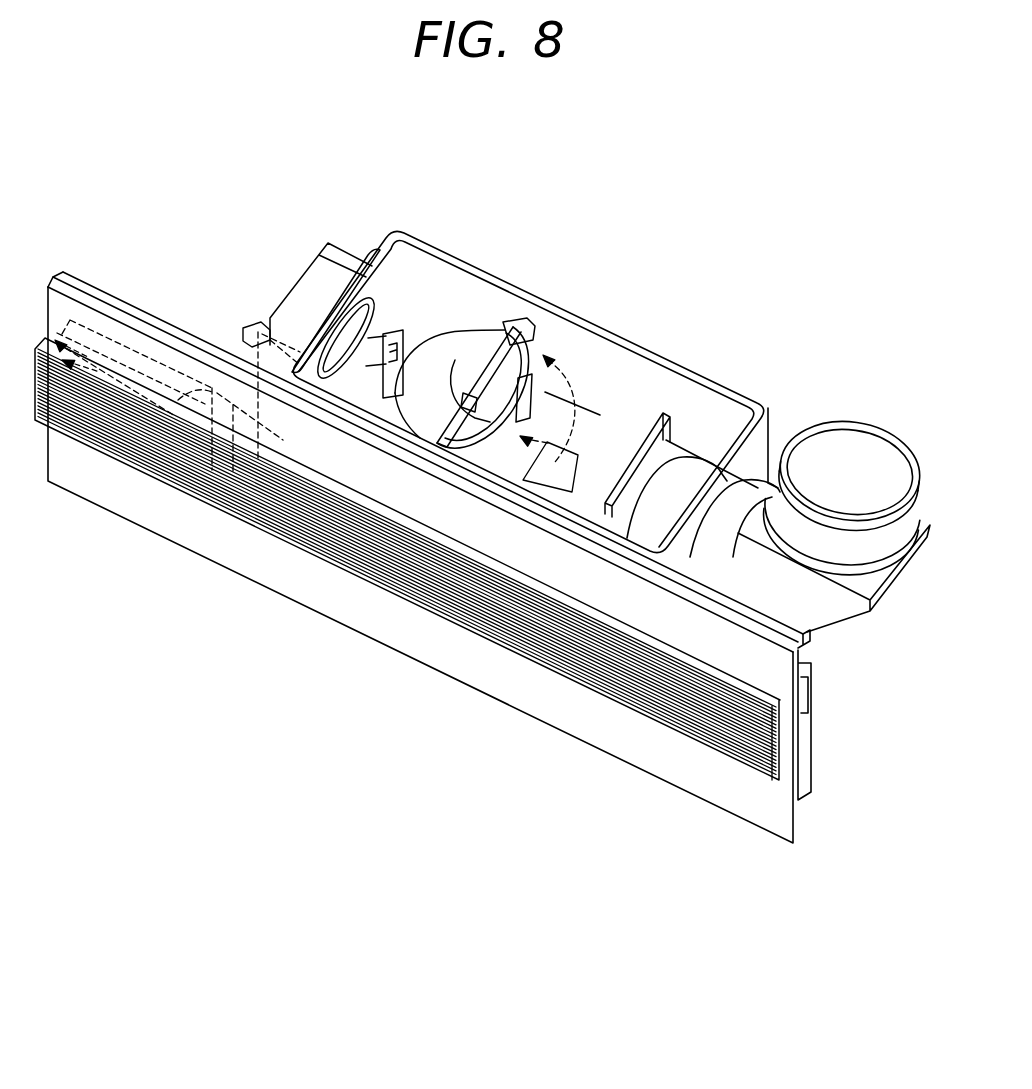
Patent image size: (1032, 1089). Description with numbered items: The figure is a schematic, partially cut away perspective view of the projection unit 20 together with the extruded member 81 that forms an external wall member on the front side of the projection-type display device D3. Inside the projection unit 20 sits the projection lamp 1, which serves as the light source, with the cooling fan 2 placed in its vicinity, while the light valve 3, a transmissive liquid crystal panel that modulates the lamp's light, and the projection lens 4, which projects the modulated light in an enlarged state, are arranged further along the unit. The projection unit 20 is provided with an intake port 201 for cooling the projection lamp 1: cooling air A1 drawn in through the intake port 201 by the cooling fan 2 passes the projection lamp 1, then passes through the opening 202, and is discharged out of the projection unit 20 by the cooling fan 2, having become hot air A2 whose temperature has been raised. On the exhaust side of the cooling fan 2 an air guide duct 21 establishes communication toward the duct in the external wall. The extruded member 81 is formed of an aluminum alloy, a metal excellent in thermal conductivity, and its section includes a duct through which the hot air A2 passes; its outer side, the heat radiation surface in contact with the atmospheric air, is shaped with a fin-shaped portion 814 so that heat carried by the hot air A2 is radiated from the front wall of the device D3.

The projection lamp 1 is at (450, 325).
The cooling fan 2 is at (312, 270).
The light valve 3 is at (662, 437).
The projection lens 4 is at (843, 423).
The projection unit 20 is at (733, 368).
The air guide duct 21 is at (238, 344).
The extruded member 81 is at (208, 563).
The intake port 201 is at (590, 433).
The opening 202 is at (384, 256).
The fin-shaped portion 814 is at (353, 573).
The cooling air A1 is at (565, 340).
The hot air A2 is at (93, 360).
The projection-type display device D3 is at (218, 745).